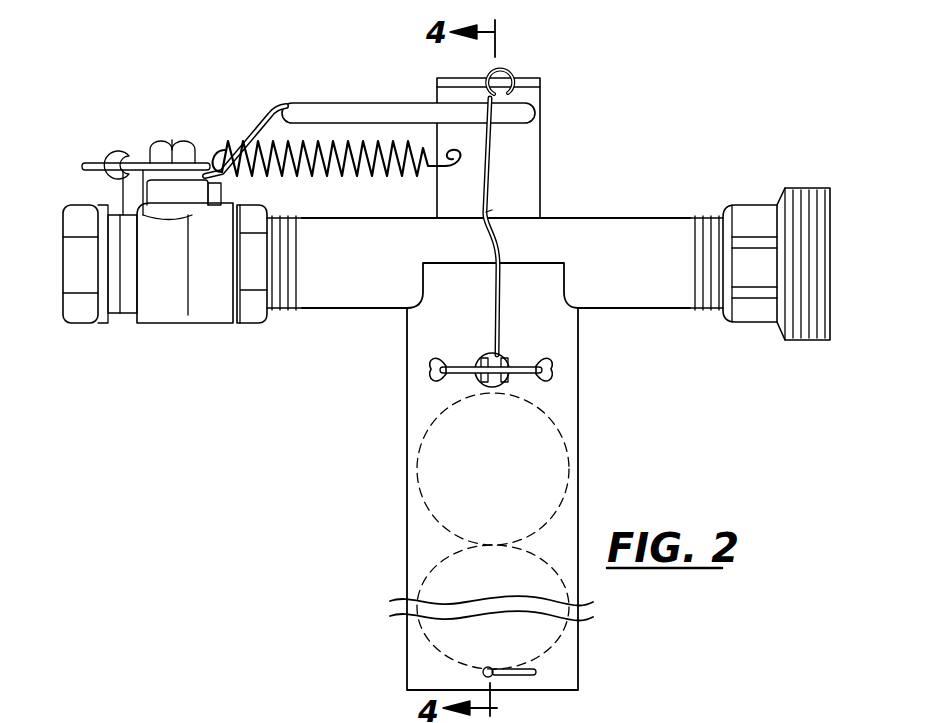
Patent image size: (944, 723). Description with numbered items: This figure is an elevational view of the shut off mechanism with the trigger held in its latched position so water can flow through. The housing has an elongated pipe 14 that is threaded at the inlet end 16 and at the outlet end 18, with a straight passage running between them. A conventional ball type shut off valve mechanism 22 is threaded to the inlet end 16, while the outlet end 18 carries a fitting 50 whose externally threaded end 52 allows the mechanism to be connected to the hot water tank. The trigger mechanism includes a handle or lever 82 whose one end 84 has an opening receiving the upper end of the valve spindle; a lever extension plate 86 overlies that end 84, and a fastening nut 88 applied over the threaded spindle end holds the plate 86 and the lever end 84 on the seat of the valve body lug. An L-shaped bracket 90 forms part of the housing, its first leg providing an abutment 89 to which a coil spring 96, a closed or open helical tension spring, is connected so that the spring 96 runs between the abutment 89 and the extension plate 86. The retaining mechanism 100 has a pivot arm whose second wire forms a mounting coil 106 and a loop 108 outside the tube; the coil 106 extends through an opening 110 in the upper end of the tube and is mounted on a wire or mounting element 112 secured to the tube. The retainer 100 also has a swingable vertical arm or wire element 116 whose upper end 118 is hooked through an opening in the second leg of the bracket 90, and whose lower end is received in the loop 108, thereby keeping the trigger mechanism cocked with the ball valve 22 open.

The elongated pipe 14 is at (638, 231).
The inlet end 16 is at (287, 312).
The outlet end 18 is at (708, 311).
The ball type shut off valve mechanism 22 is at (184, 321).
The fitting 50 is at (753, 213).
The externally threaded end 52 is at (818, 190).
The handle or lever 82 is at (340, 100).
The one end of the lever 84 is at (163, 180).
The lever extension plate 86 is at (105, 162).
The fastening nut 88 is at (162, 147).
The abutment 89 is at (225, 182).
The L-shaped bracket 90 is at (543, 140).
The coil spring 96 is at (215, 150).
The retaining mechanism 100 is at (478, 138).
The mounting coil 106 is at (505, 362).
The loop 108 is at (500, 385).
The opening 110 is at (485, 360).
The wire or mounting element 112 is at (465, 377).
The swingable vertical arm or wire element 116 is at (487, 211).
The upper end 118 is at (508, 70).